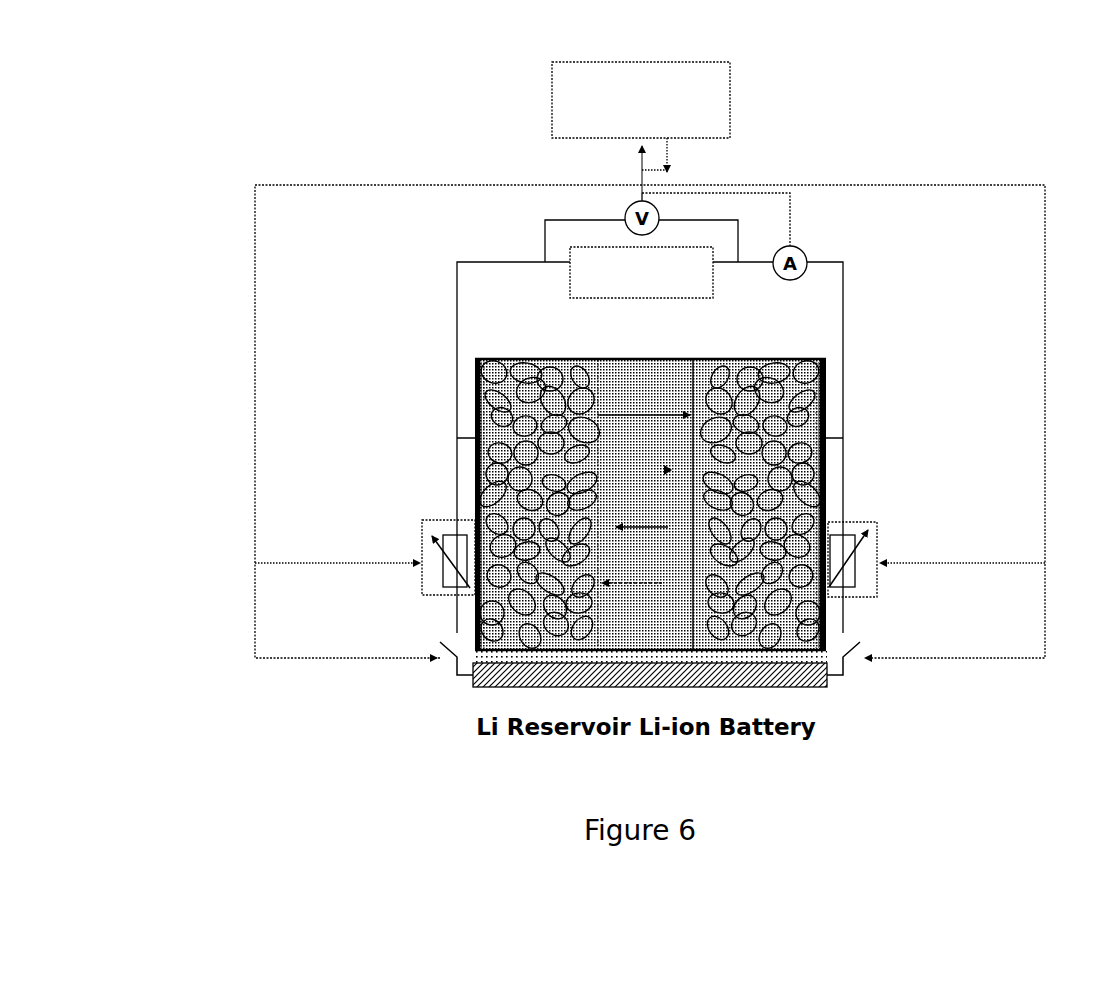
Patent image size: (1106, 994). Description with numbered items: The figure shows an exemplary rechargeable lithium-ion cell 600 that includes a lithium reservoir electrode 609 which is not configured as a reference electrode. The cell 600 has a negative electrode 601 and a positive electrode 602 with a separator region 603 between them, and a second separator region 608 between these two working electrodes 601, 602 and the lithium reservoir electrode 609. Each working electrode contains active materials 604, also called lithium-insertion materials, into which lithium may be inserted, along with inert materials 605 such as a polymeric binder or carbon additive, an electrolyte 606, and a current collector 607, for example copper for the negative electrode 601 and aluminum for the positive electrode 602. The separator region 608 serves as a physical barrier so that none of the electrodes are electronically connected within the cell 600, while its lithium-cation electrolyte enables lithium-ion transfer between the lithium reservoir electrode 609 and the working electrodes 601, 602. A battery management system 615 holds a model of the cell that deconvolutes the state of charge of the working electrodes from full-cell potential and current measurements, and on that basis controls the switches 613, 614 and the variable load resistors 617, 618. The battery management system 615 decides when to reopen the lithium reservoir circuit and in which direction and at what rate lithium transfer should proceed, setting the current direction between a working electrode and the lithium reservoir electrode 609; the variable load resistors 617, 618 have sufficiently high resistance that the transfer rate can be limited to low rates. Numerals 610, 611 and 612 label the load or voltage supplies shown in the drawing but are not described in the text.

The rechargeable lithium-ion cell 600 is at (197, 132).
The negative electrode 601 is at (530, 357).
The positive electrode 602 is at (755, 357).
The separator region 603 is at (636, 357).
The active materials 604 is at (477, 381).
The inert materials 605 is at (476, 419).
The electrolyte 606 is at (476, 452).
The current collector 607 is at (476, 490).
The separator region 608 is at (514, 660).
The lithium reservoir electrode 609 is at (802, 680).
The load / voltage supply 610 is at (714, 280).
The load / voltage supply 611 is at (878, 524).
The load / voltage supply 612 is at (428, 526).
The switch 613 is at (856, 670).
The switch 614 is at (444, 669).
The battery management system 615 is at (732, 101).
The variable load resistor 617 is at (936, 566).
The variable load resistor 618 is at (443, 580).